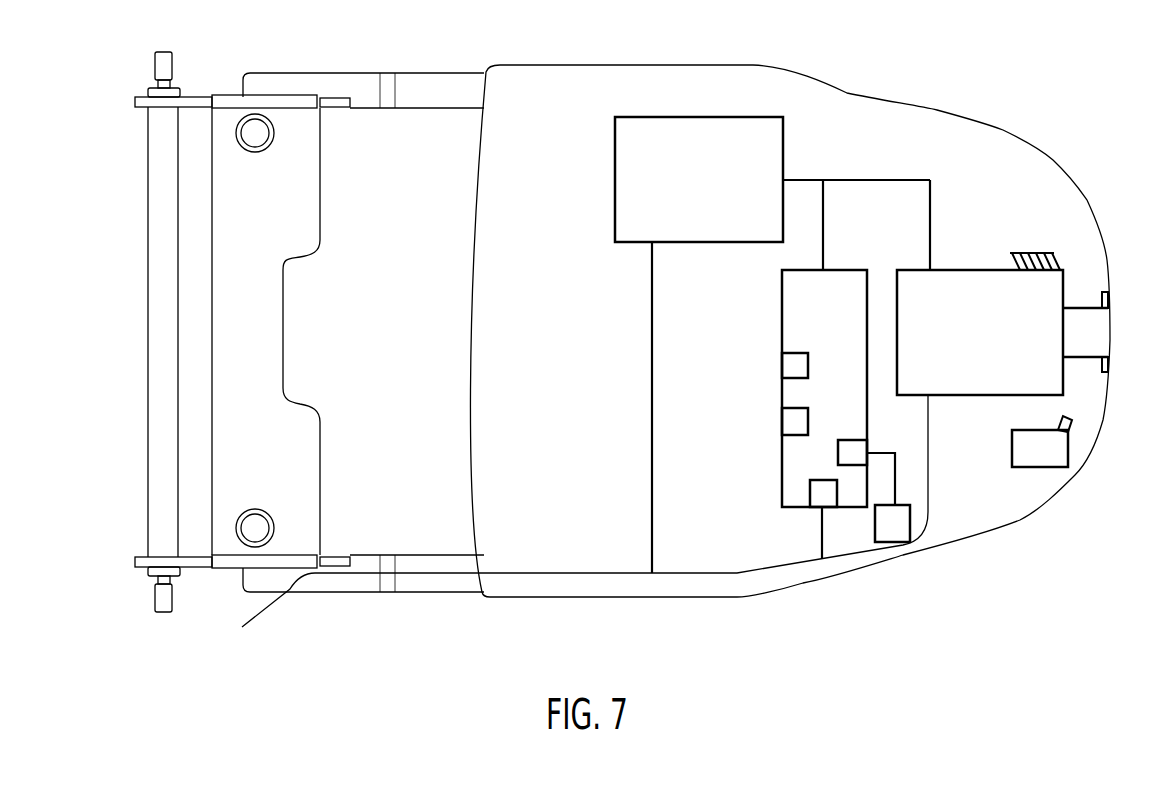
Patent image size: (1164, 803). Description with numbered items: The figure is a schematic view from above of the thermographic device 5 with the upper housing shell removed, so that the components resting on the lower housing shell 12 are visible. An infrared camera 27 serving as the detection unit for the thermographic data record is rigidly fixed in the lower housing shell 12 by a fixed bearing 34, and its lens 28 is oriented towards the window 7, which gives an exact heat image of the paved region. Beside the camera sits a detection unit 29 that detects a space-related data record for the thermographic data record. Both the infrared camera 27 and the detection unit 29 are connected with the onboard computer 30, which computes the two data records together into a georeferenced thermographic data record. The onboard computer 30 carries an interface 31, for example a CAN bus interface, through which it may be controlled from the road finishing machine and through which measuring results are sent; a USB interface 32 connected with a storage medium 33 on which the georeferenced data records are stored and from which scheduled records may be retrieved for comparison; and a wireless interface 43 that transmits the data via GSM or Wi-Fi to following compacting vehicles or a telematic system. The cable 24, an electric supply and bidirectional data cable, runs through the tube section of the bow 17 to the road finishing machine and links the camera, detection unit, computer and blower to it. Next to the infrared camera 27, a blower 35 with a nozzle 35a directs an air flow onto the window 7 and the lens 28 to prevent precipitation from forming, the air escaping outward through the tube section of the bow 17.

The thermographic device 5 is at (913, 592).
The window 7 is at (1112, 302).
The lower housing shell 12 is at (1061, 502).
The bow 17 is at (437, 583).
The cable 24 is at (570, 574).
The infrared camera 27 is at (968, 343).
The lens 28 is at (1093, 328).
The detection unit 29 is at (686, 193).
The onboard computer 30 is at (811, 343).
The interface 31 is at (815, 493).
The USB interface 32 is at (858, 447).
The storage medium 33 is at (783, 418).
The fixed bearing 34 is at (1013, 253).
The blower 35 is at (1055, 450).
The nozzle 35a is at (1072, 422).
The wireless interface 43 is at (783, 364).